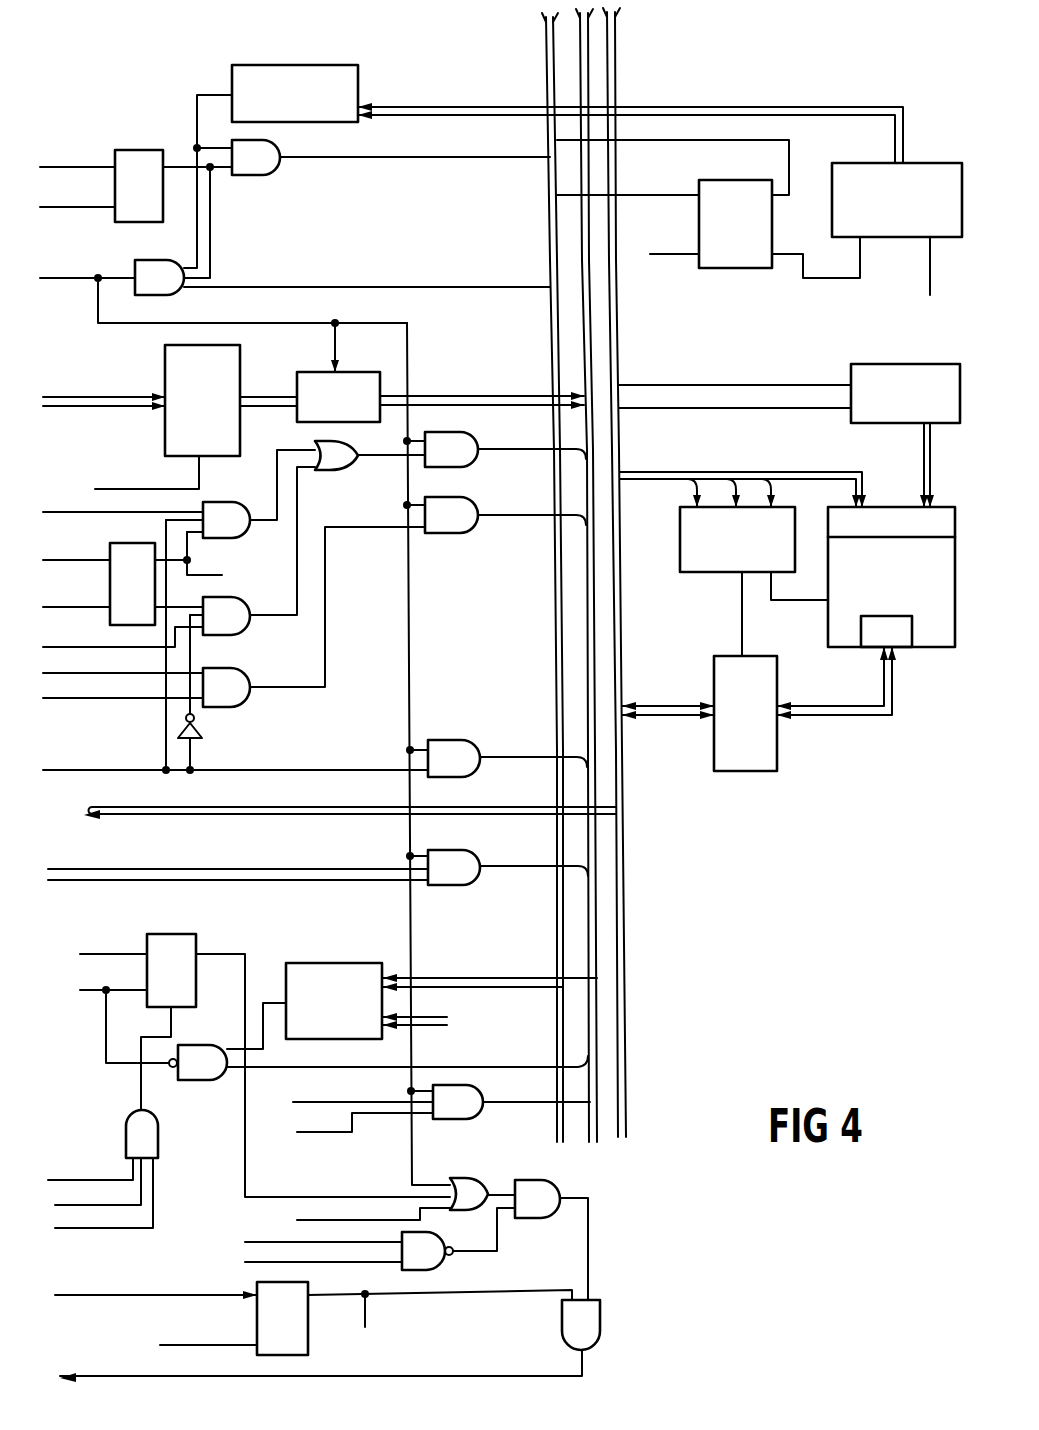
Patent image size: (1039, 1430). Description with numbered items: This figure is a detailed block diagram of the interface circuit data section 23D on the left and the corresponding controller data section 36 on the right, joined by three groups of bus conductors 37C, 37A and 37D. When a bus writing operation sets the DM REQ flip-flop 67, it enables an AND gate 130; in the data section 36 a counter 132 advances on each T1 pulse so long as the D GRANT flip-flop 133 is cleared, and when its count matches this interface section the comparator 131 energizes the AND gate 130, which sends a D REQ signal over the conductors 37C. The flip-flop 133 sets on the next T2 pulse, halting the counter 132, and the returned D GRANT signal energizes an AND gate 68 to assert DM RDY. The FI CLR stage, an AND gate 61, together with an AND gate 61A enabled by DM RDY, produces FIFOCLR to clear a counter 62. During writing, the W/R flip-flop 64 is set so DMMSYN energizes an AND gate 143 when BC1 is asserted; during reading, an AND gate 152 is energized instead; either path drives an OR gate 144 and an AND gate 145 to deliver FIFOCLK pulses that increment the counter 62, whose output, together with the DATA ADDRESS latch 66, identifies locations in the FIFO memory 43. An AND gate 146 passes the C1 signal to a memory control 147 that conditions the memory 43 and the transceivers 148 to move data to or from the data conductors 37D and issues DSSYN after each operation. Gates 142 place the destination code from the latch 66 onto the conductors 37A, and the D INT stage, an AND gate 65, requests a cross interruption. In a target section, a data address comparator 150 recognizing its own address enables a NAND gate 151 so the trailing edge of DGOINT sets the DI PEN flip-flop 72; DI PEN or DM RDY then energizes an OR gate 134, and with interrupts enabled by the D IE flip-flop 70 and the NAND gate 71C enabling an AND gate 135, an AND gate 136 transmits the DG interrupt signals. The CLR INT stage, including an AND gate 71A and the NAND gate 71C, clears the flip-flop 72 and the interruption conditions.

The data section of the interface circuit 23D is at (471, 699).
The data section 36 is at (759, 524).
The conductors 37A is at (583, 322).
The conductors 37C is at (550, 228).
The data conductors 37D is at (613, 567).
The memory 43 is at (918, 647).
The AND gate 61 is at (252, 668).
The AND gate 61A is at (475, 530).
The counter 62 is at (877, 364).
The flip-flop 64 is at (118, 543).
The AND gate 65 is at (480, 1115).
The DATA ADDRESS latch 66 is at (165, 362).
The flip-flop 67 is at (124, 150).
The AND gate 68 is at (145, 260).
The flip-flop 70 is at (308, 1330).
The AND gate 71A is at (160, 1130).
The NAND gate 71C is at (455, 1262).
The flip-flop 72 is at (150, 934).
The AND gate 130 is at (276, 172).
The comparator 131 is at (232, 68).
The counter 132 is at (860, 163).
The D GRANT flip-flop 133 is at (712, 268).
The OR gate 134 is at (468, 1178).
The AND gate 135 is at (560, 1185).
The AND gate 136 is at (600, 1318).
The gates 142 is at (313, 372).
The AND gate 143 is at (248, 538).
The OR gate 144 is at (343, 470).
The AND gate 145 is at (476, 455).
The AND gate 146 is at (478, 740).
The memory control 147 is at (690, 572).
The transceivers 148 is at (714, 668).
The data address comparator 150 is at (465, 850).
The NAND gate 151 is at (208, 1080).
The AND gate 152 is at (250, 597).